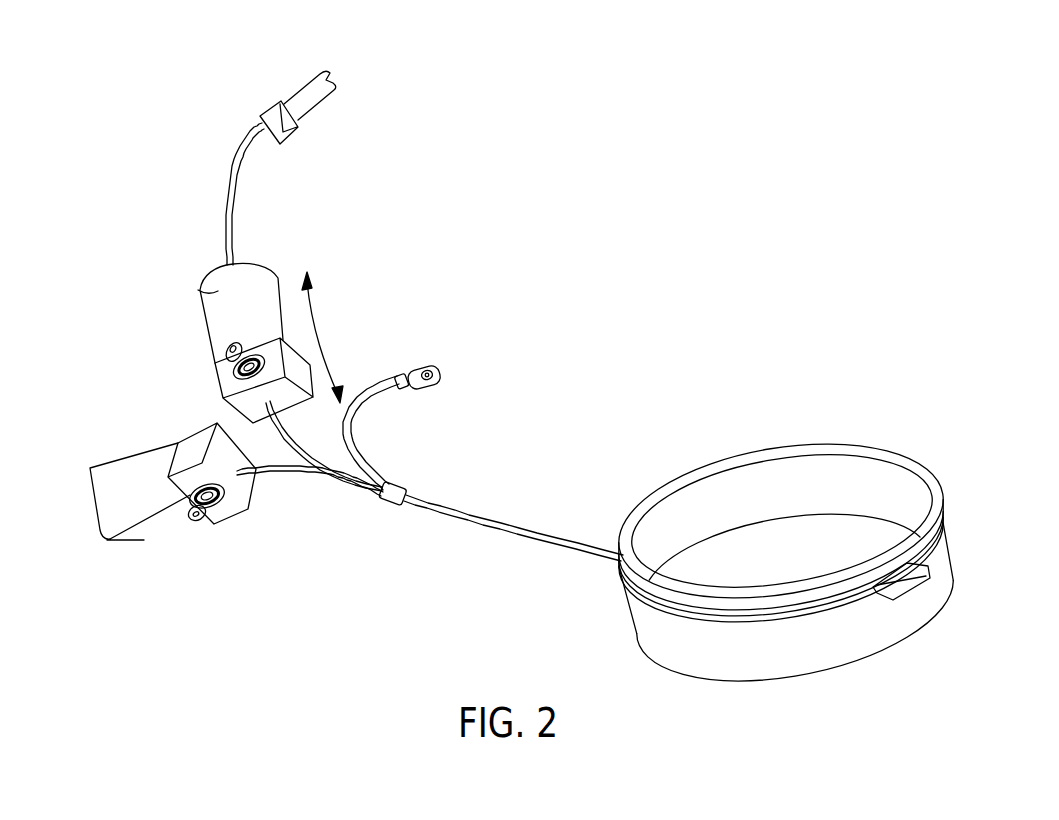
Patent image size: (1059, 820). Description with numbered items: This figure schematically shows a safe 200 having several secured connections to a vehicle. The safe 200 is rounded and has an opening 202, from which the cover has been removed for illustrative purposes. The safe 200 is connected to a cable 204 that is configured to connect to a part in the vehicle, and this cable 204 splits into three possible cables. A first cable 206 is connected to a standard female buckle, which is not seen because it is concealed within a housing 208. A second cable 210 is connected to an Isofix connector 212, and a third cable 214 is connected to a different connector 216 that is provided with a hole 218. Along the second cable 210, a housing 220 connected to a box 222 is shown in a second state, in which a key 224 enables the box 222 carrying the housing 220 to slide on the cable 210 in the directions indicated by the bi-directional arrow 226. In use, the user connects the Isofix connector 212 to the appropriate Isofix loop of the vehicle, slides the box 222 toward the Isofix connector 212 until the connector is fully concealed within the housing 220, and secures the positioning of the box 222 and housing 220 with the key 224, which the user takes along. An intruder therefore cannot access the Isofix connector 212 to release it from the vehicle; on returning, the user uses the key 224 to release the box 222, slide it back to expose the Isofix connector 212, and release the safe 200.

The safe 200 is at (839, 302).
The opening 202 is at (858, 443).
The cable 204 is at (533, 517).
The first cable 206 is at (293, 481).
The housing 208 is at (157, 520).
The second cable 210 is at (223, 202).
The Isofix connector 212 is at (271, 105).
The third cable 214 is at (352, 433).
The connector 216 is at (413, 368).
The hole 218 is at (433, 387).
The housing 220 is at (199, 289).
The box 222 is at (227, 388).
The key 224 is at (226, 351).
The bi-directional arrow 226 is at (313, 305).